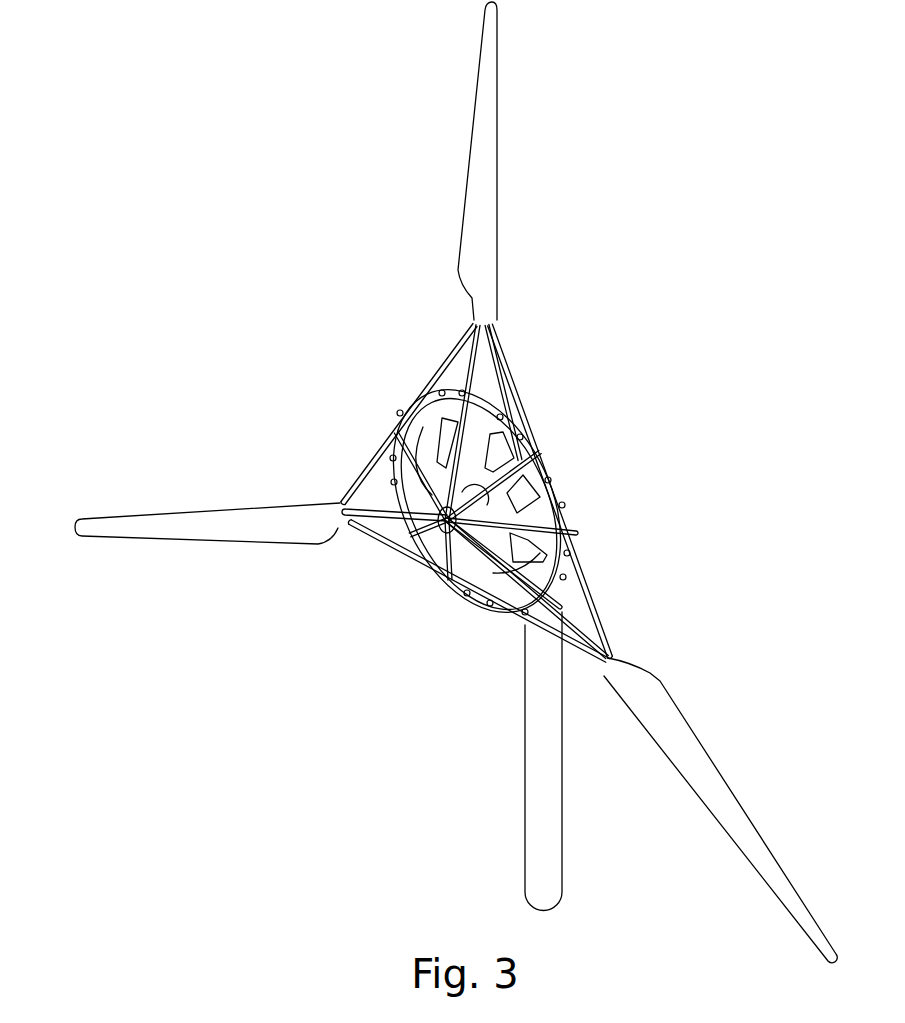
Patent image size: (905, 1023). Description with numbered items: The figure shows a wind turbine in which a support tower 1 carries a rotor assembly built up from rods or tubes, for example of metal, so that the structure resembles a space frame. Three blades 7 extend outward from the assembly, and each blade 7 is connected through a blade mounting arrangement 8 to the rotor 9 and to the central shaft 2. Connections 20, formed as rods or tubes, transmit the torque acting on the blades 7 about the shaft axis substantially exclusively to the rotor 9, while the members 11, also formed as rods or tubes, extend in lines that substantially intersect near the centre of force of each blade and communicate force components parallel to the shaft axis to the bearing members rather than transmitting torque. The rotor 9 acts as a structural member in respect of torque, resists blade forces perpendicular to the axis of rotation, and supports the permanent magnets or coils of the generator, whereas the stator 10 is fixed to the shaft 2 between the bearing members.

The support tower 1 is at (547, 822).
The shaft 2 is at (443, 523).
The blade 7 is at (487, 197).
The blade mounting arrangement 8 is at (467, 478).
The rotor 9 is at (507, 417).
The stator 10 is at (535, 518).
The member 11 is at (467, 410).
The connection 20 is at (453, 353).